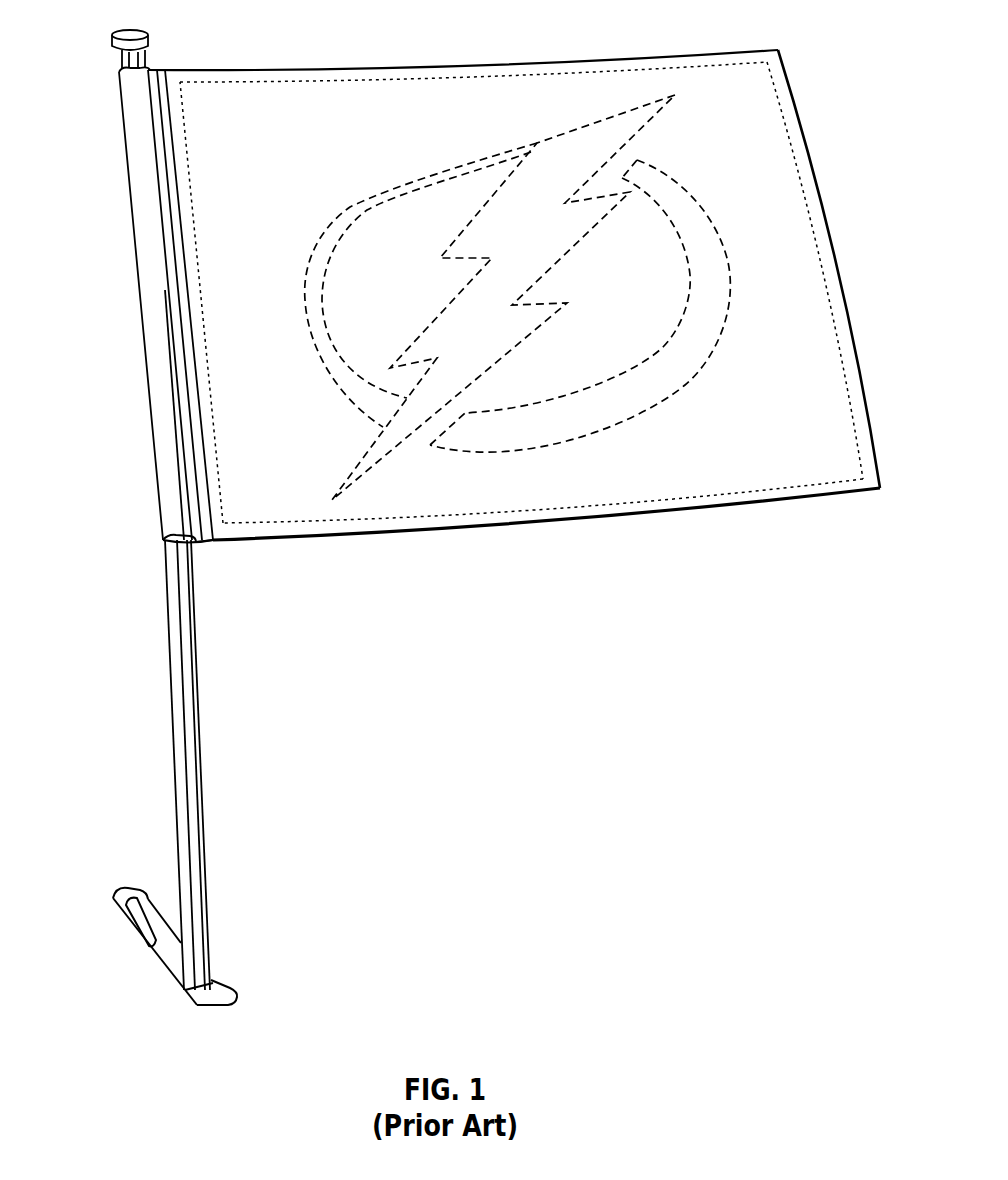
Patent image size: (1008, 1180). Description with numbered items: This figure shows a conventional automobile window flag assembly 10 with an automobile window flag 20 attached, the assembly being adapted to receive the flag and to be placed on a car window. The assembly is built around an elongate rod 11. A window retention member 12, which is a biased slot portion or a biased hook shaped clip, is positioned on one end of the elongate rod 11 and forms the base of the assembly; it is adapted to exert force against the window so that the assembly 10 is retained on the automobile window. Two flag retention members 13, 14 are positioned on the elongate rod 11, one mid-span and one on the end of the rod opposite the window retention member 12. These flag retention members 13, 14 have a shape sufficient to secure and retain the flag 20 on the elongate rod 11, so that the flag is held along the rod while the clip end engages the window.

The automobile window flag assembly 10 is at (101, 175).
The elongate rod 11 is at (185, 690).
The window retention member 12 is at (132, 928).
The flag retention member 13 is at (163, 541).
The flag retention member 14 is at (112, 48).
The automobile window flag 20 is at (795, 447).